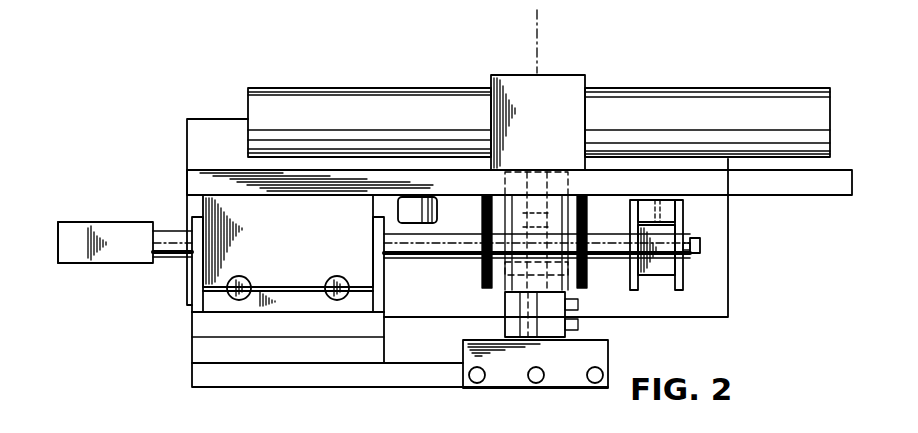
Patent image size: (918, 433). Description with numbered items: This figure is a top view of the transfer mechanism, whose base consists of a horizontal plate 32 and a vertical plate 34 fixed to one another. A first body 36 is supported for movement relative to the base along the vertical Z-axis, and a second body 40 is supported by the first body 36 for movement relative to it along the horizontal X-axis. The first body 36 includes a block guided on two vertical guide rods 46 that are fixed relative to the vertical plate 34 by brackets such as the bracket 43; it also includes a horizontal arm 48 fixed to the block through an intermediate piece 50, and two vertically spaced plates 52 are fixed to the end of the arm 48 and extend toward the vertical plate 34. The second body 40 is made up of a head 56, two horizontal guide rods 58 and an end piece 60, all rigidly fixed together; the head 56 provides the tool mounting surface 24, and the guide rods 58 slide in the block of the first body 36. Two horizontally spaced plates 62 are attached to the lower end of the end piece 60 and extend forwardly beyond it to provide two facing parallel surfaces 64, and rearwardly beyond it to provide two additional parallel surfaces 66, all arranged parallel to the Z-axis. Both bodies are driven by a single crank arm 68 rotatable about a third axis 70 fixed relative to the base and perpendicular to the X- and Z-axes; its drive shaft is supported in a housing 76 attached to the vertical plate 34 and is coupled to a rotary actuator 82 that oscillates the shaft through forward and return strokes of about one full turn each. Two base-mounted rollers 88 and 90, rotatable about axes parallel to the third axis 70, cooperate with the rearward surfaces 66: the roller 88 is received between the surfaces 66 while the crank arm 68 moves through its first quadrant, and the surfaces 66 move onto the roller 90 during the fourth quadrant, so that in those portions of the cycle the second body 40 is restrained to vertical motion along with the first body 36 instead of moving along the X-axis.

The tool mounting surface 24 is at (106, 264).
The horizontal plate 32 is at (718, 297).
The vertical plate 34 is at (790, 198).
The first body 36 is at (196, 293).
The second body 40 is at (125, 234).
The bracket 43 is at (213, 212).
The vertical guide rods 46 is at (244, 278).
The horizontal arm 48 is at (403, 378).
The intermediate piece 50 is at (196, 354).
The vertically spaced plates 52 is at (560, 375).
The head 56 is at (70, 240).
The horizontal guide rods 58 is at (459, 250).
The end piece 60 is at (667, 237).
The horizontally spaced plates 62 is at (632, 266).
The parallel surfaces 64 is at (677, 282).
The additional parallel surfaces 66 is at (648, 214).
The crank arm 68 is at (516, 305).
The third axis 70 is at (539, 64).
The housing 76 is at (483, 270).
The rotary actuator 82 is at (578, 87).
The roller 88 is at (641, 211).
The roller 90 is at (437, 212).